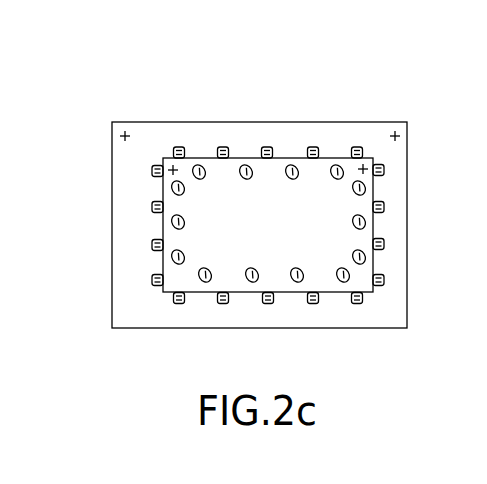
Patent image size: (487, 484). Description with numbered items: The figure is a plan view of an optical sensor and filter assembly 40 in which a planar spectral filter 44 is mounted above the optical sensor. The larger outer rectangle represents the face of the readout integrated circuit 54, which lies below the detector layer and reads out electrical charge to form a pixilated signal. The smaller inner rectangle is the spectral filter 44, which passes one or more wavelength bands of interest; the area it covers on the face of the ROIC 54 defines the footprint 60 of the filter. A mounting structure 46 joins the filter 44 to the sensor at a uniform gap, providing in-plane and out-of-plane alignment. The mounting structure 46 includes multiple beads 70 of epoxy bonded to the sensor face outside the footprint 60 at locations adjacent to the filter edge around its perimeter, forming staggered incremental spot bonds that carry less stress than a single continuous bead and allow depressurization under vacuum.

The optical sensor and filter assembly 40 is at (292, 214).
The planar spectral filter 44 is at (279, 230).
The mounting structure 46 is at (396, 185).
The readout integrated circuit (ROIC) 54 is at (408, 328).
The footprint 60 is at (194, 299).
The beads 70 is at (308, 147).